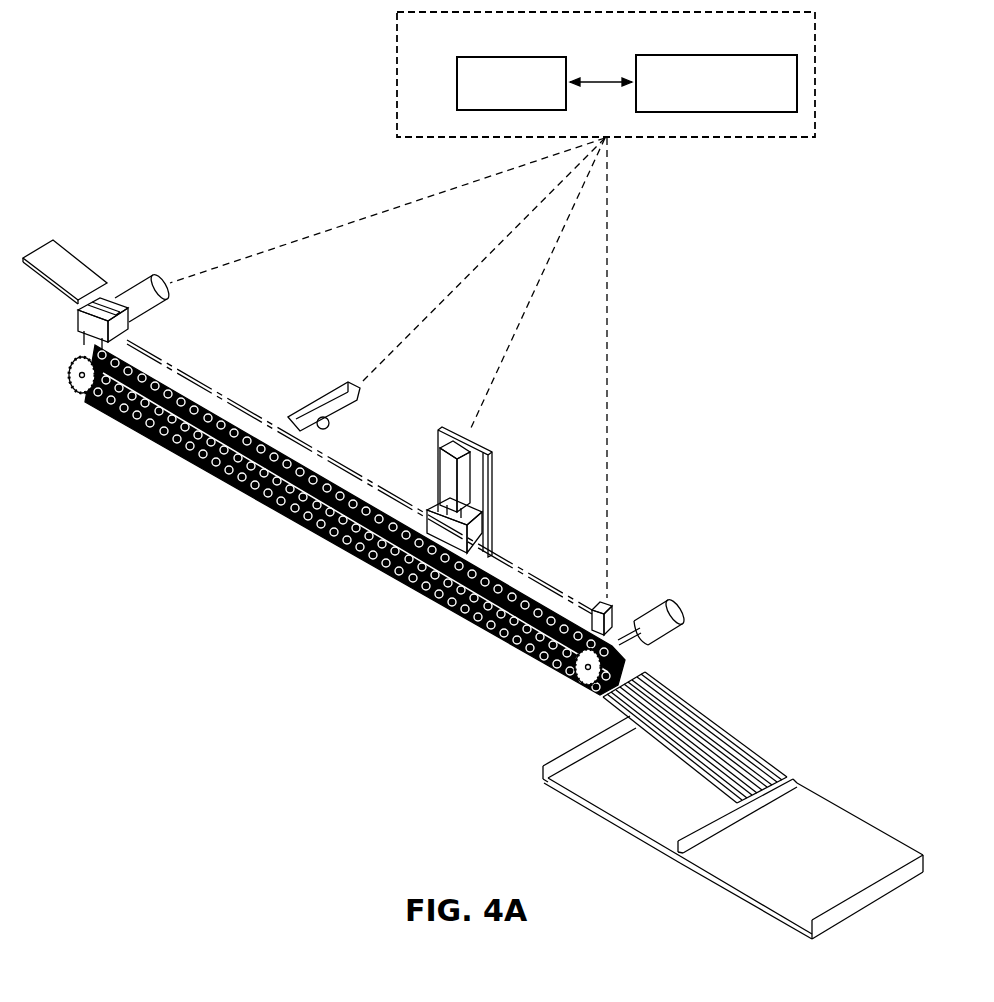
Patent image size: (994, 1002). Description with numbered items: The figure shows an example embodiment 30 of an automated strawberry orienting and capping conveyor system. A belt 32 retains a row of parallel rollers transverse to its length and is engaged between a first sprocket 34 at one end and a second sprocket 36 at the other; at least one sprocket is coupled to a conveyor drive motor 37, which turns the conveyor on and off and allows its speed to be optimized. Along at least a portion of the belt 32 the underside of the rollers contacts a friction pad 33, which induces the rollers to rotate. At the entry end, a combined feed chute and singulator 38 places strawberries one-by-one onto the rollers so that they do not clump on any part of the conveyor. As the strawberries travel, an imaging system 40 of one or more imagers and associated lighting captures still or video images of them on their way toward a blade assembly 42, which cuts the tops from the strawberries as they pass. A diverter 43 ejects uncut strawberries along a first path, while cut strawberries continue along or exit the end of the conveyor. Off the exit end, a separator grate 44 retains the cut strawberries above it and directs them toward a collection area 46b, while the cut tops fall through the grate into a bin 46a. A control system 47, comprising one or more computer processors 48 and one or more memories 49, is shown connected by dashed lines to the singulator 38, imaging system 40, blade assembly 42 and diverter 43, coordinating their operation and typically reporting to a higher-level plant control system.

The conveyor system 30 is at (113, 208).
The belt 32 is at (352, 472).
The friction pad 33 is at (182, 450).
The first sprocket 34 is at (84, 390).
The second sprocket 36 is at (597, 682).
The conveyor drive motor 37 is at (658, 632).
The feed chute and/or singulator 38 is at (153, 282).
The imaging system 40 is at (333, 387).
The blade assembly 42 is at (480, 478).
The diverter 43 is at (602, 600).
The separator grate 44 is at (703, 775).
The bin 46a is at (575, 785).
The collection area 46b is at (758, 888).
The control system 47 is at (396, 42).
The computer processor 48 is at (481, 57).
The memory 49 is at (678, 55).